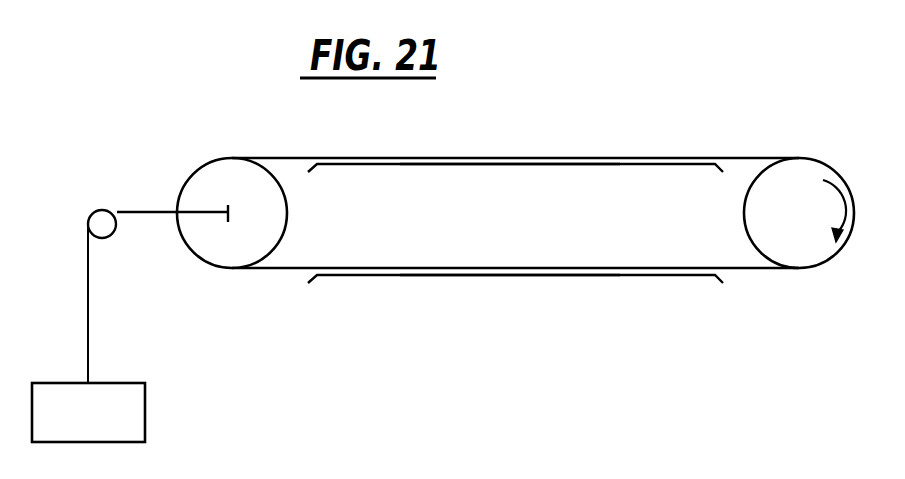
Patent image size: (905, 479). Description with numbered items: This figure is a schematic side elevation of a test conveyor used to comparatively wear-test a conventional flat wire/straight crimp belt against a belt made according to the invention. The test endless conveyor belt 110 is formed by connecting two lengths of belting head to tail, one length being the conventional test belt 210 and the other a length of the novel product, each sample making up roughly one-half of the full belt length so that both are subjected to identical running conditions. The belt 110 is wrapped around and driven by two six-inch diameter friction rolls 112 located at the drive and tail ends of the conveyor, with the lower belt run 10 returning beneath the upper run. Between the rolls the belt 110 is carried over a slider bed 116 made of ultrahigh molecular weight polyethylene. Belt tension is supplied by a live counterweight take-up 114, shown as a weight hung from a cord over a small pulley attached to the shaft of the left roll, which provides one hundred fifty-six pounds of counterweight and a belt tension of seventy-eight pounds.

The test endless conveyor belt 110 is at (515, 186).
The friction rolls 112 is at (485, 219).
The test belt 210 is at (505, 180).
The lower belt run / plate 10 is at (510, 258).
The slider bed 116 is at (510, 236).
The live counterweight take-up 114 is at (126, 326).